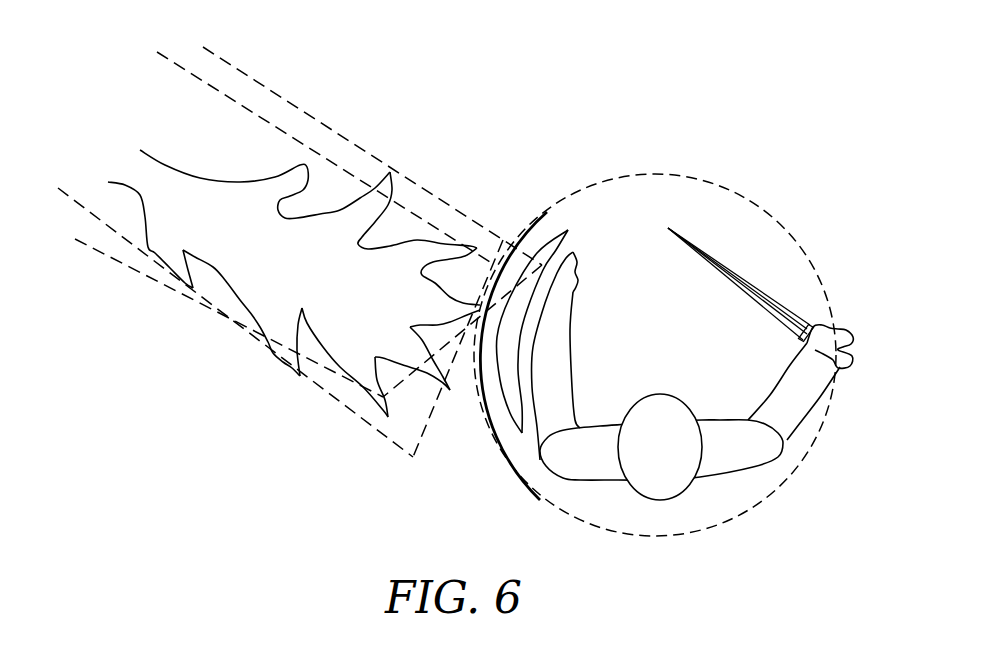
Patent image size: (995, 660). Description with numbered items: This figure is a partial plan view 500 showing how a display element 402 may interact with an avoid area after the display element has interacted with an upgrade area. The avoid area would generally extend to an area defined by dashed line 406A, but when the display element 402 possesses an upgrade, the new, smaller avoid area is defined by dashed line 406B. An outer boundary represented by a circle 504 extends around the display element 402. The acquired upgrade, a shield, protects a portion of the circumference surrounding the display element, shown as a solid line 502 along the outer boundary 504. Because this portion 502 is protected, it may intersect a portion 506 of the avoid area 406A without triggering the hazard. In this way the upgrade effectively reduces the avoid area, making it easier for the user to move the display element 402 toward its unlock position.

The partial plan view 500 is at (806, 130).
The display element 402 is at (603, 467).
The dashed line defining avoid area 406A is at (323, 399).
The dashed line defining new avoid area 406B is at (215, 292).
The solid line portion of outer boundary 502 is at (493, 432).
The circle representing outer boundary 504 is at (702, 532).
The portion of avoid area 506 is at (520, 263).